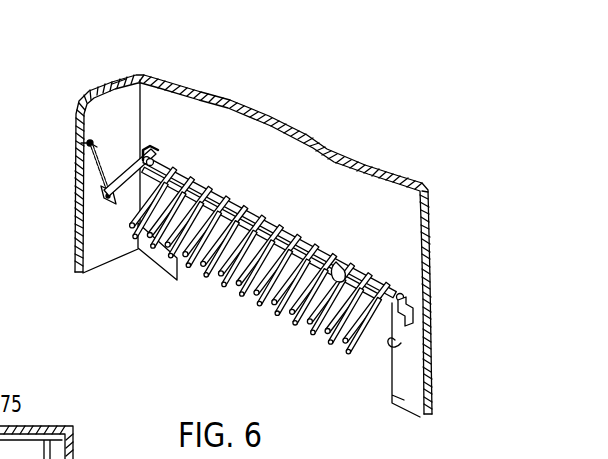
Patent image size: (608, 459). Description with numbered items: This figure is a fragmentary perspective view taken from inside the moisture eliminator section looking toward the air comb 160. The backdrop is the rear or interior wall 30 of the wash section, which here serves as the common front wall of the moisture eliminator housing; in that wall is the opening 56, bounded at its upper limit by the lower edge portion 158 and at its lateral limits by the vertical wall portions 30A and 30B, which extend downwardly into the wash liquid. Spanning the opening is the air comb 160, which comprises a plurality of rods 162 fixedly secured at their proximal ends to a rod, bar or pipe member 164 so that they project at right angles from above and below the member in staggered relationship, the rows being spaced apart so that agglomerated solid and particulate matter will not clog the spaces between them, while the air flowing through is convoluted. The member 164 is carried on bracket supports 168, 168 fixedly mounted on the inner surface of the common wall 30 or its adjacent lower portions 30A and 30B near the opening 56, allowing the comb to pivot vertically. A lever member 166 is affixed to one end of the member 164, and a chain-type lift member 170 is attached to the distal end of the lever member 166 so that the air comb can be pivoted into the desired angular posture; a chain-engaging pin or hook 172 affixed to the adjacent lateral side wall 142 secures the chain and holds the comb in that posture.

The rear or interior wall 30 is at (310, 140).
The vertical wall portion 30A is at (410, 395).
The vertical wall portion 30B is at (148, 252).
The opening 56 is at (395, 340).
The lateral side wall 142 is at (118, 84).
The lower edge portion 158 is at (318, 243).
The air comb 160 is at (277, 214).
The rods 162 is at (338, 263).
The rod, bar or pipe member 164 is at (237, 196).
The lever member 166 is at (148, 147).
The bracket supports 168 is at (166, 158).
The chain-type lift member 170 is at (104, 172).
The chain-engaging pin or hook 172 is at (81, 144).